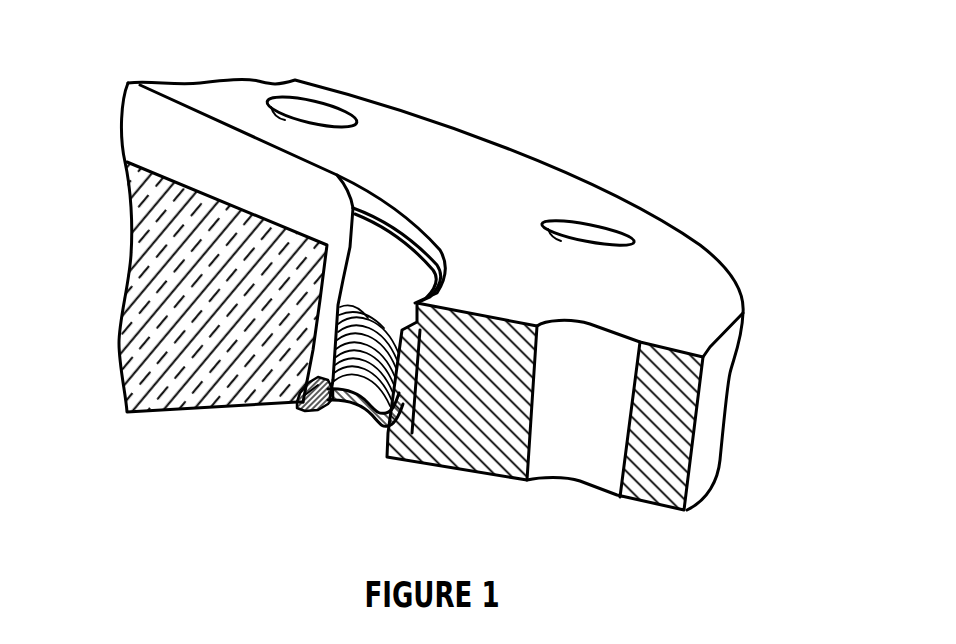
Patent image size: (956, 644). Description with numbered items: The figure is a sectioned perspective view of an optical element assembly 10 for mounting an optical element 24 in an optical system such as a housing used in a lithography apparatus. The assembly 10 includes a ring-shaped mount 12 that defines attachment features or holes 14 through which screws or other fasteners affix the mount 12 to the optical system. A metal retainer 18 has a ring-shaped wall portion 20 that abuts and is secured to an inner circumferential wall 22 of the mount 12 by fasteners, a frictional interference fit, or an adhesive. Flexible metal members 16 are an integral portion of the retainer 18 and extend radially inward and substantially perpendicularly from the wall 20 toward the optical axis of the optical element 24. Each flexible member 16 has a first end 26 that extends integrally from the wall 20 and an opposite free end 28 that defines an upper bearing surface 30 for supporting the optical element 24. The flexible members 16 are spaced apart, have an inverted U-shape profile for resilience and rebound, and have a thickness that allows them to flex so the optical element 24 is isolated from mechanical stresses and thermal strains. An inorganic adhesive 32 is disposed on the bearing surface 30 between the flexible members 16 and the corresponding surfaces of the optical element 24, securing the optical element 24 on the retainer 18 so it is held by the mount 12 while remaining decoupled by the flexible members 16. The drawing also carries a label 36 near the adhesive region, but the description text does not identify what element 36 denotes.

The optical element assembly 10 is at (681, 91).
The mount 12 is at (515, 173).
The holes 14 is at (610, 237).
The flexible metal members 16 is at (360, 368).
The retainer 18 is at (430, 403).
The ring-shaped wall portion 20 is at (384, 282).
The inner circumferential wall 22 is at (390, 212).
The optical element 24 is at (123, 380).
The first end 26 is at (386, 411).
The free end 28 is at (289, 413).
The upper bearing surface 30 is at (331, 405).
The inorganic adhesive 32 is at (283, 407).
The sealing surface 36 is at (307, 400).